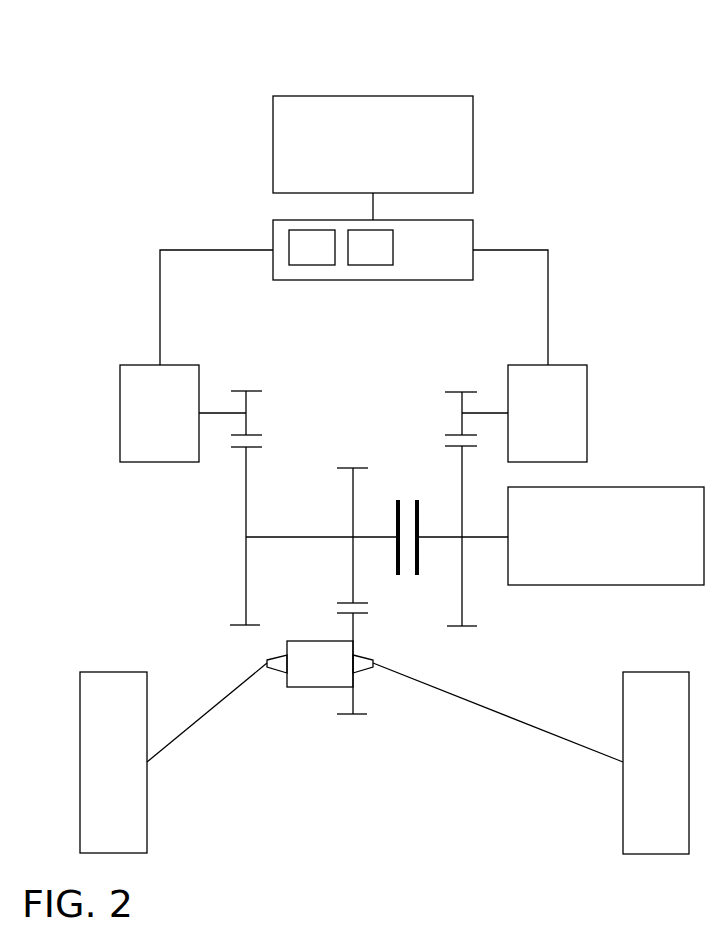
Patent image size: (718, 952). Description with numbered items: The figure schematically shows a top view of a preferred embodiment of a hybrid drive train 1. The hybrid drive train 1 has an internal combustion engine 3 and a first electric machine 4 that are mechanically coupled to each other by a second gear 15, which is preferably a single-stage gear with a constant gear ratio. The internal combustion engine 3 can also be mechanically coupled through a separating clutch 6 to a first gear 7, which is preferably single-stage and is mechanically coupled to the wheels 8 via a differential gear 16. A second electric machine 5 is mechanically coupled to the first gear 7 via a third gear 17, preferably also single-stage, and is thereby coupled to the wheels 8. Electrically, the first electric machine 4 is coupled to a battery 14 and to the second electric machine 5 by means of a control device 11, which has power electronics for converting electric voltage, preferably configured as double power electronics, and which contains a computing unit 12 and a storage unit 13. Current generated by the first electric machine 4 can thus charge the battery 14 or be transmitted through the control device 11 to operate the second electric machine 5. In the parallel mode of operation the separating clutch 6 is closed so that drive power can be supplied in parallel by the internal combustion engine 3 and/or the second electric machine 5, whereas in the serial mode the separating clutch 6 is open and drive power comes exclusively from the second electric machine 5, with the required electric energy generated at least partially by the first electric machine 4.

The hybrid drive train 1 is at (306, 58).
The internal combustion engine 3 is at (661, 507).
The first electric machine 4 is at (567, 399).
The second electric machine 5 is at (147, 399).
The separating clutch 6 is at (408, 584).
The first gear 7 is at (353, 734).
The wheels 8 is at (93, 692).
The control device 11 is at (454, 232).
The computing unit 12 is at (261, 239).
The storage unit 13 is at (310, 226).
The battery 14 is at (419, 155).
The second gear 15 is at (468, 640).
The differential gear 16 is at (315, 674).
The third gear 17 is at (242, 640).